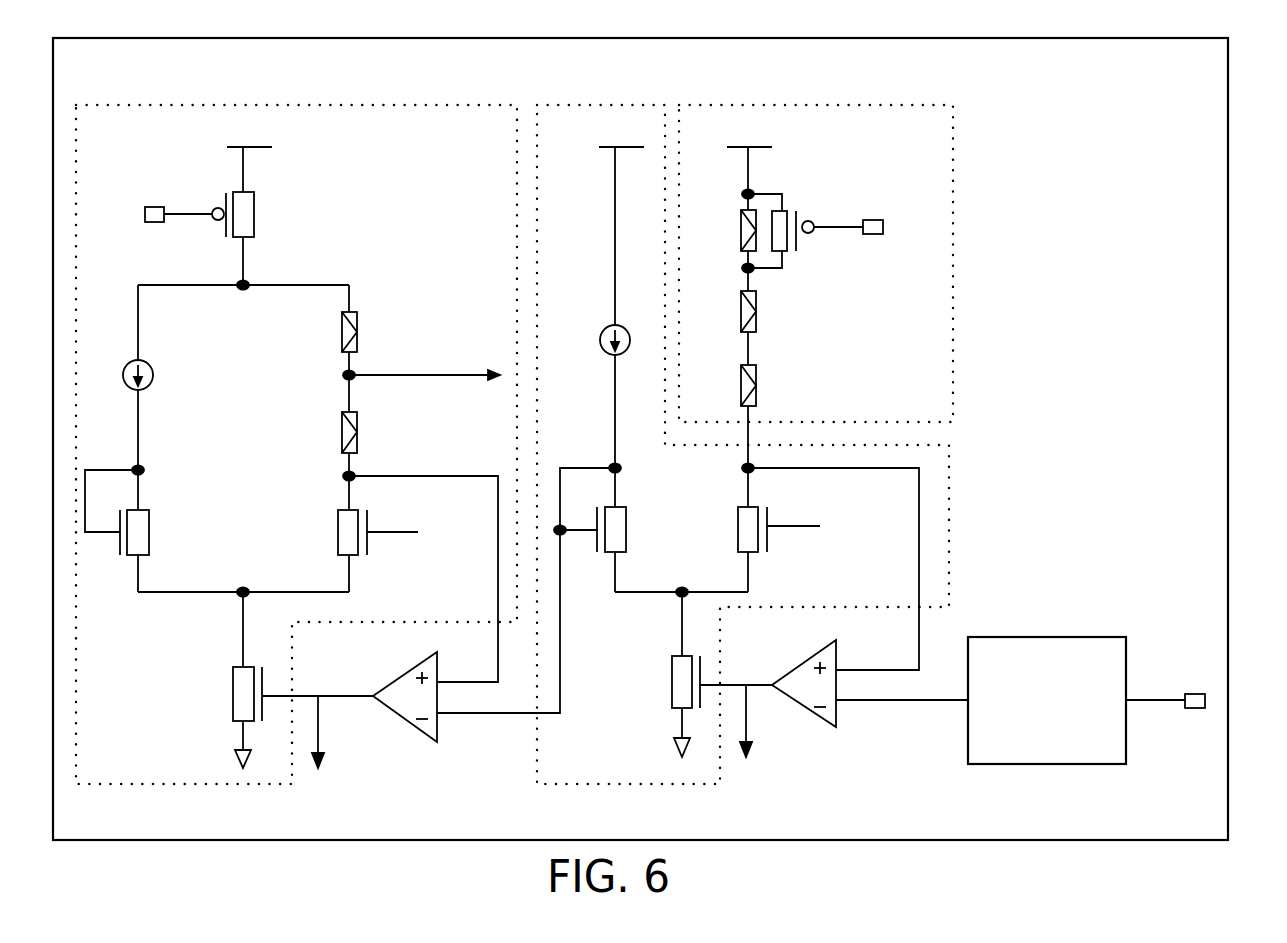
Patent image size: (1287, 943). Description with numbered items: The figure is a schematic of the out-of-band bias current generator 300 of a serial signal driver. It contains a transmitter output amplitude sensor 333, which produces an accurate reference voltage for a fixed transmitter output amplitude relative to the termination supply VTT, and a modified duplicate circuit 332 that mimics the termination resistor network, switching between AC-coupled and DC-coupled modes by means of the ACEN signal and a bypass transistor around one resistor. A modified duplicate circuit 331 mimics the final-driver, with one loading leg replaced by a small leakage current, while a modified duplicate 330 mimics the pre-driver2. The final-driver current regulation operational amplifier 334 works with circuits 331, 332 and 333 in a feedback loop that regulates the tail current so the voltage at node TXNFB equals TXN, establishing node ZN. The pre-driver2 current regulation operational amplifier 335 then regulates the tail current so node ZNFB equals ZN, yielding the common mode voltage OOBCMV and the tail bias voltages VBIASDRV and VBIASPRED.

The out-of-band bias current generator (OOB BIASGEN) 300 is at (1229, 338).
The modified duplicate of the pre-driver2 330 is at (389, 105).
The modified duplicate of the final-driver 331 is at (626, 105).
The modified duplicate of the termination resistor network 332 is at (813, 105).
The transmitter output amplitude sensor 333 is at (1071, 637).
The final-driver current regulation operational amplifier 334 is at (797, 666).
The pre-driver2 current regulation operational amplifier 335 is at (399, 679).